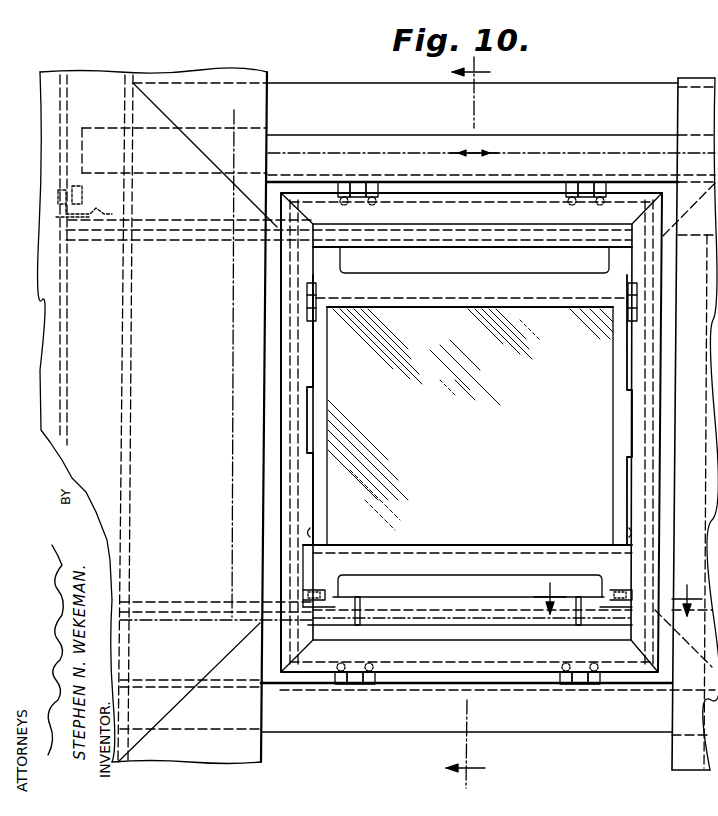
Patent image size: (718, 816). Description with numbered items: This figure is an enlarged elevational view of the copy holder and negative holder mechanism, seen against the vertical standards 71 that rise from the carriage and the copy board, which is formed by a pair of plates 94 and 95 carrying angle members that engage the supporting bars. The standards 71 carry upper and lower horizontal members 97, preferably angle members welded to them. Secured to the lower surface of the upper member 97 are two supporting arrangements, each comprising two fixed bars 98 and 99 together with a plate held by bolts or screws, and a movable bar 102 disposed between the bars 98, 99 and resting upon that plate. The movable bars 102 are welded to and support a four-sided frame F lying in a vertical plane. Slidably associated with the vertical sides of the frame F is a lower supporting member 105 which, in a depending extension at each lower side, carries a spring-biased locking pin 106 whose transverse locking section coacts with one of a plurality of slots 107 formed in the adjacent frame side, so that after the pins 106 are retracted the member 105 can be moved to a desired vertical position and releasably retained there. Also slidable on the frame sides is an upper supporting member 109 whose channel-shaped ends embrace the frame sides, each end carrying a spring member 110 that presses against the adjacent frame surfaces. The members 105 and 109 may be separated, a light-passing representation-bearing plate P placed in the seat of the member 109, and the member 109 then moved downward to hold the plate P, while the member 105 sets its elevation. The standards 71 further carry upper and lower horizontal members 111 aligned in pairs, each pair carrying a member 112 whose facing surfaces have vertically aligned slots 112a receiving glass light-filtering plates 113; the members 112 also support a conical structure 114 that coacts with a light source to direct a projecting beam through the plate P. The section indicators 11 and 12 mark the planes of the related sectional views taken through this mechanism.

The vertical standard 71 is at (60, 321).
The plate 94 is at (246, 76).
The plate 95 is at (696, 78).
The horizontal member 97 is at (445, 134).
The bar 98 is at (342, 180).
The bar 99 is at (375, 180).
The movable bar 102 is at (372, 166).
The lower supporting member 105 is at (474, 533).
The locking pin 106 is at (345, 597).
The slot 107 is at (312, 535).
The upper supporting member 109 is at (480, 276).
The spring member 110 is at (307, 292).
The horizontal member 111 is at (72, 208).
The member 112 is at (203, 205).
The slot 112a is at (192, 240).
The light-filtering plate 113 is at (232, 480).
The conical structure 114 is at (352, 79).
The frame F is at (278, 380).
The light-passing representation-bearing plate P is at (325, 424).
The section line 11 is at (457, 422).
The section line 12 is at (618, 591).